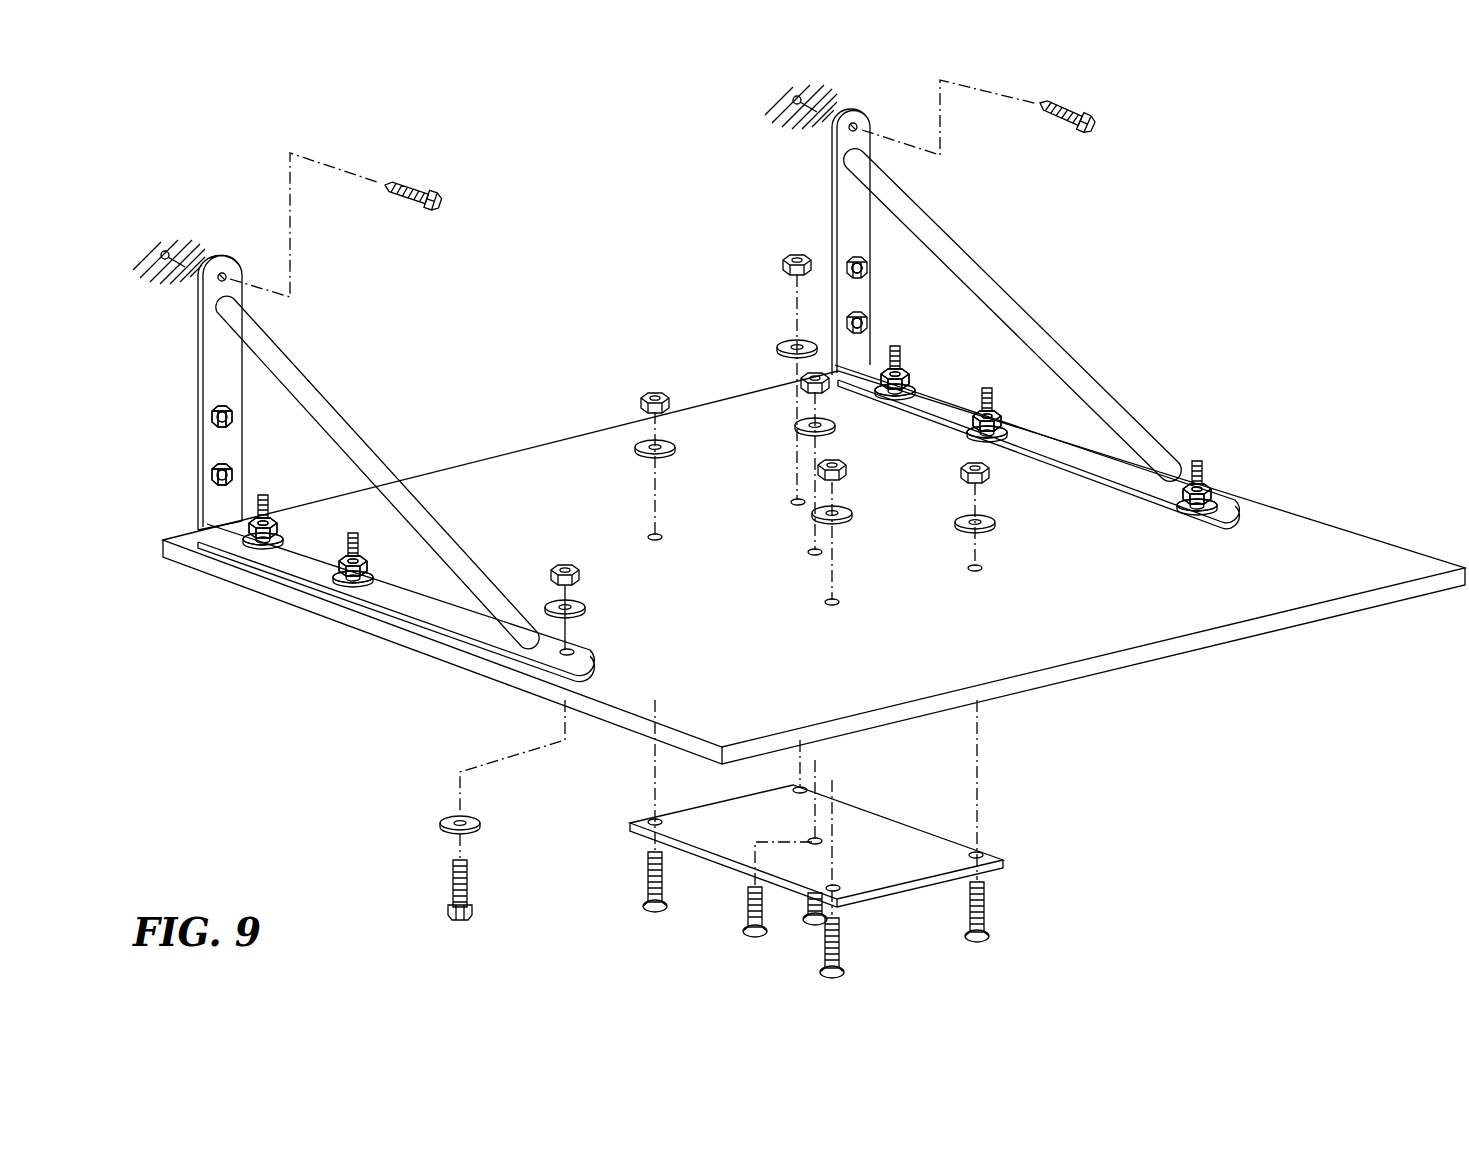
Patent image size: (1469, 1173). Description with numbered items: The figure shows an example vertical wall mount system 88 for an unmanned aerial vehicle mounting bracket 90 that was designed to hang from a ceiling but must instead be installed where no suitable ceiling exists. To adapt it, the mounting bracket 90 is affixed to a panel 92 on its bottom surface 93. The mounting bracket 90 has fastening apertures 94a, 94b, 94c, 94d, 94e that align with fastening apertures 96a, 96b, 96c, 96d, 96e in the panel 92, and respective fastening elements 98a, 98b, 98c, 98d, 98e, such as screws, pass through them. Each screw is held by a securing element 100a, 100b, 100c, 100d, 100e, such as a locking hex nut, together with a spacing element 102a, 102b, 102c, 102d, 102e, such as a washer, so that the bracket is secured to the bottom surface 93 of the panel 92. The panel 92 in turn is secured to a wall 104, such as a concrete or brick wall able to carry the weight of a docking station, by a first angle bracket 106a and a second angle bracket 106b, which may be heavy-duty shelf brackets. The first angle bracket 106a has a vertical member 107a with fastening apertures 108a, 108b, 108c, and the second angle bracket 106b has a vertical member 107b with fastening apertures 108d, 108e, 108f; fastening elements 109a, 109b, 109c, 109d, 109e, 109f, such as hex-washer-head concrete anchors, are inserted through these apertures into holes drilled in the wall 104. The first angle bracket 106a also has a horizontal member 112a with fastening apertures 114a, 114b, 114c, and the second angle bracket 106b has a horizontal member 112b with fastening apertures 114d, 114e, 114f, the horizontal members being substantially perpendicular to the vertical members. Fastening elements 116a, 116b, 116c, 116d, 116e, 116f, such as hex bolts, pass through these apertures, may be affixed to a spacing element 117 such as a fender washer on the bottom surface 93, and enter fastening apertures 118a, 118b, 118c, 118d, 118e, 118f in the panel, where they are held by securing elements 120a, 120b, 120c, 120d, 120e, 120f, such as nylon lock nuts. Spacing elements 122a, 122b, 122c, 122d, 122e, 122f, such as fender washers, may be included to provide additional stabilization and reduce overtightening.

The vertical wall mount system 88 is at (1265, 163).
The unmanned aerial vehicle mounting bracket 90 is at (726, 836).
The panel 92 is at (1441, 558).
The bottom surface 93 is at (1426, 592).
The fastening aperture 94a is at (654, 819).
The fastening aperture 94b is at (808, 788).
The fastening aperture 94c is at (985, 855).
The fastening aperture 94d is at (838, 885).
The fastening aperture 94e is at (818, 838).
The fastening aperture 96a is at (845, 604).
The fastening aperture 96b is at (661, 535).
The fastening aperture 96c is at (797, 506).
The fastening aperture 96d is at (982, 570).
The fastening aperture 96e is at (813, 556).
The fastening element 98a is at (650, 880).
The fastening element 98b is at (750, 910).
The fastening element 98c is at (983, 895).
The fastening element 98d is at (840, 945).
The fastening element 98e is at (810, 925).
The securing element 100a is at (849, 470).
The securing element 100b is at (669, 403).
The securing element 100c is at (783, 262).
The securing element 100d is at (990, 473).
The securing element 100e is at (829, 386).
The spacing element 102a is at (851, 516).
The spacing element 102b is at (675, 449).
The spacing element 102c is at (778, 347).
The spacing element 102d is at (995, 523).
The spacing element 102e is at (835, 429).
The wall 104 is at (548, 196).
The first angle bracket 106a is at (200, 318).
The second angle bracket 106b is at (832, 175).
The vertical member 107a is at (215, 362).
The vertical member 107b is at (867, 142).
The fastening aperture 108a is at (227, 275).
The fastening aperture 108b is at (210, 418).
The fastening aperture 108c is at (240, 458).
The fastening aperture 108d is at (847, 127).
The fastening aperture 108e is at (853, 250).
The fastening aperture 108f is at (862, 312).
The fastening element 109a is at (420, 192).
The fastening element 109b is at (235, 413).
The fastening element 109c is at (237, 480).
The fastening element 109d is at (1078, 113).
The fastening element 109e is at (867, 262).
The fastening element 109f is at (845, 326).
The horizontal member 112a is at (523, 600).
The horizontal member 112b is at (1067, 447).
The fastening aperture 114a is at (283, 540).
The fastening aperture 114b is at (375, 585).
The fastening aperture 114c is at (575, 652).
The fastening aperture 114d is at (908, 382).
The fastening aperture 114e is at (1002, 428).
The fastening aperture 114f is at (1213, 497).
The fastening element 116a is at (257, 510).
The fastening element 116b is at (353, 547).
The fastening element 116c is at (452, 870).
The fastening element 116d is at (894, 350).
The fastening element 116e is at (988, 392).
The fastening element 116f is at (1199, 462).
The spacing element 117 is at (445, 822).
The fastening aperture 118a is at (172, 242).
The fastening aperture 118b is at (200, 410).
The fastening aperture 118c is at (205, 468).
The fastening aperture 118d is at (798, 103).
The fastening aperture 118e is at (848, 262).
The fastening aperture 118f is at (845, 320).
The securing element 120a is at (272, 515).
The securing element 120b is at (366, 560).
The securing element 120c is at (578, 574).
The securing element 120d is at (900, 368).
The securing element 120e is at (1003, 414).
The securing element 120f is at (1205, 482).
The spacing element 122a is at (277, 533).
The spacing element 122b is at (372, 574).
The spacing element 122c is at (586, 608).
The spacing element 122d is at (914, 386).
The spacing element 122e is at (1008, 430).
The spacing element 122f is at (1217, 507).